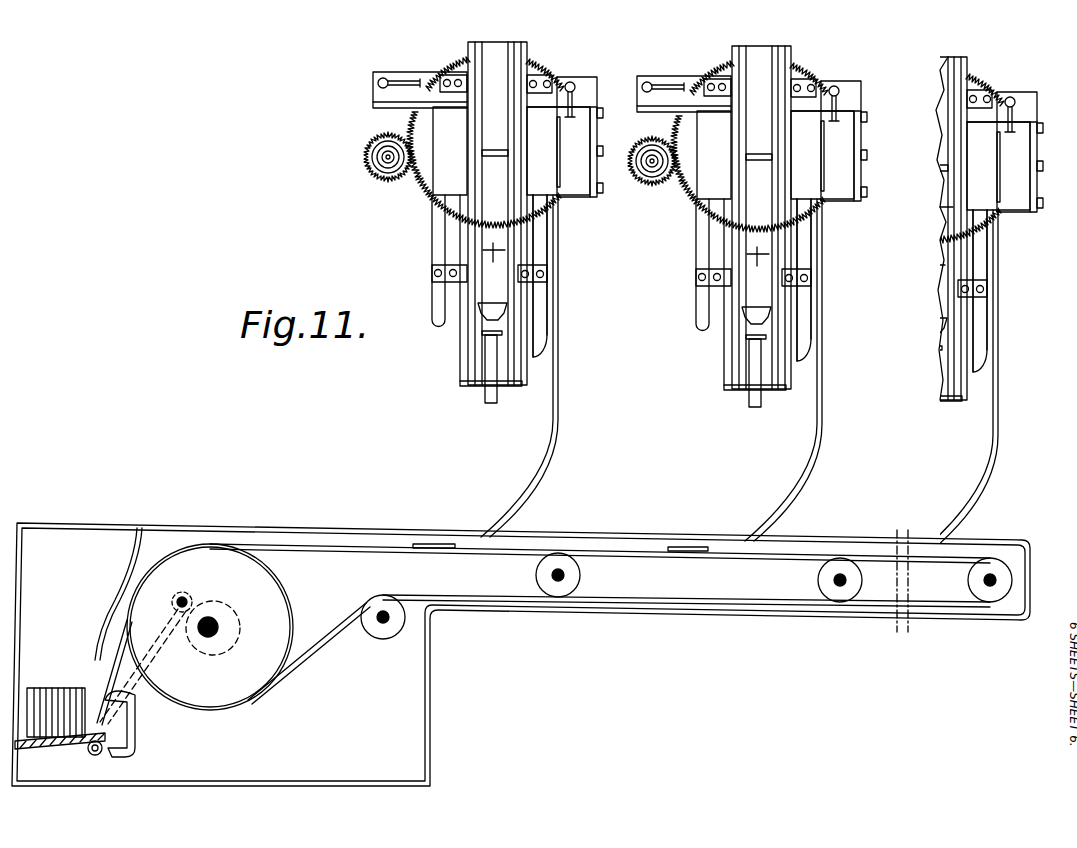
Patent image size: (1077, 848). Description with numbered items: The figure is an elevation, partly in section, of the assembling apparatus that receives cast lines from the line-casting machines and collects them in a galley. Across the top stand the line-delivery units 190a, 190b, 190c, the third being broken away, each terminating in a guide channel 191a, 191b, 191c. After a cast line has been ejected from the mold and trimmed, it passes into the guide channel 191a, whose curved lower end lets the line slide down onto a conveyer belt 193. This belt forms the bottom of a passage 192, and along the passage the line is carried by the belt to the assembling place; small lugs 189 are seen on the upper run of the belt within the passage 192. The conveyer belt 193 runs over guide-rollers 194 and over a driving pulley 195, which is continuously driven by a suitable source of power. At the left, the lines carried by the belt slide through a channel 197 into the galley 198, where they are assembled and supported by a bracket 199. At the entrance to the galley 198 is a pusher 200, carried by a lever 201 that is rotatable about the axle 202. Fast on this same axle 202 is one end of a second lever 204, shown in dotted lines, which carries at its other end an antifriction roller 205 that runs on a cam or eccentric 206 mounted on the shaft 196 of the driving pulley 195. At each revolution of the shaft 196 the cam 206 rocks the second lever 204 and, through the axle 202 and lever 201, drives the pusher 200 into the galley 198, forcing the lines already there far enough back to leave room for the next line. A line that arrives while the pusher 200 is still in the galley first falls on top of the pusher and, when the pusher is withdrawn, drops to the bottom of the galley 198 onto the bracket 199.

The stop lug 189 is at (435, 546).
The printing unit 190a is at (560, 139).
The printing unit 190b is at (824, 145).
The printing unit 190c is at (1005, 153).
The guide channel 191a is at (557, 227).
The slide 191b is at (822, 233).
The slide 191c is at (992, 248).
The passage 192 is at (612, 540).
The conveyer belt 193 is at (374, 545).
The guide-rollers 194 is at (536, 575).
The driving pulley 195 is at (272, 589).
The shaft 196 is at (212, 620).
The channel 197 is at (112, 598).
The galley 198 is at (60, 742).
The bracket 199 is at (33, 690).
The pusher 200 is at (108, 692).
The lever 201 is at (130, 717).
The axle 202 is at (94, 754).
The second lever 204 is at (168, 630).
The antifriction roller 205 is at (188, 592).
The cam or eccentric 206 is at (195, 640).